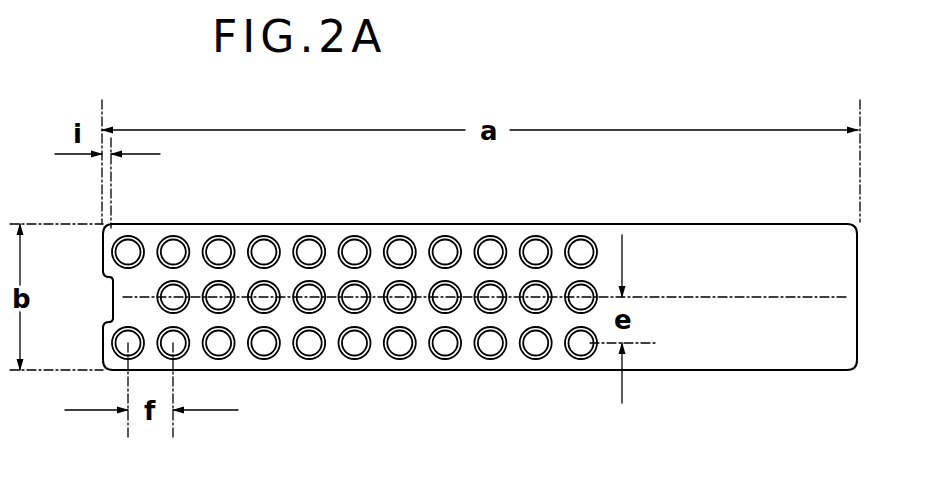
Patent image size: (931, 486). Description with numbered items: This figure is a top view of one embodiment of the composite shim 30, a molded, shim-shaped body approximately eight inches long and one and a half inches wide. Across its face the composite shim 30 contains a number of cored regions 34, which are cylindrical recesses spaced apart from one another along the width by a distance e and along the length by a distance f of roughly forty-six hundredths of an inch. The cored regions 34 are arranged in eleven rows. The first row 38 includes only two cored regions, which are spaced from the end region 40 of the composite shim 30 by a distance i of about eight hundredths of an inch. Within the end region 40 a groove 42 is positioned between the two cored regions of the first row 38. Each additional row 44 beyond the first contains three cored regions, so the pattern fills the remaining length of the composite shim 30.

The composite shim 30 is at (703, 82).
The cored regions 34 is at (130, 250).
The first row 38 is at (127, 213).
The end region 40 is at (103, 337).
The groove 42 is at (113, 293).
The row 44 is at (357, 216).